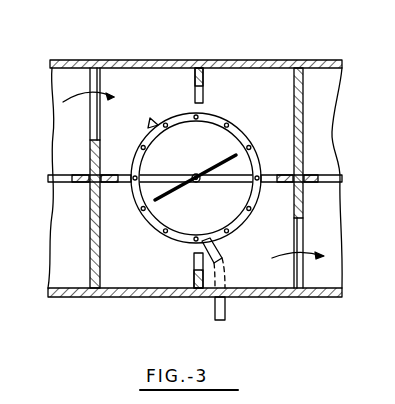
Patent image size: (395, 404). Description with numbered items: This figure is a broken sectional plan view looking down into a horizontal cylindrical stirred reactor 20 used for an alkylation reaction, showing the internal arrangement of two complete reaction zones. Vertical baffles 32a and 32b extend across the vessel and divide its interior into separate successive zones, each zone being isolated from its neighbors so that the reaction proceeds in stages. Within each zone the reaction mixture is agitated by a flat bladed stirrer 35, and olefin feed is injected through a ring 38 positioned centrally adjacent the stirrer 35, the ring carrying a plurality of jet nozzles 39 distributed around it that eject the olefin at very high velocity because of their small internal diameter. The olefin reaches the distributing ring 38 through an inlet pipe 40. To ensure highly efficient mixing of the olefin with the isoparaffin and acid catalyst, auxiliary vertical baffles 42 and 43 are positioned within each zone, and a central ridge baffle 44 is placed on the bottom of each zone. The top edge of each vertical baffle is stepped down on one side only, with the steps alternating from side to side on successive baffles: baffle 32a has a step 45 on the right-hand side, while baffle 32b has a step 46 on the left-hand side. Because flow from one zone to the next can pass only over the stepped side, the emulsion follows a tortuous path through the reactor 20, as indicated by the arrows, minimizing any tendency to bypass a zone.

The reactor 20 is at (146, 59).
The vertical baffle 32a is at (100, 249).
The vertical baffle 32b is at (293, 108).
The flat bladed stirrer 35 is at (181, 190).
The ring 38 is at (146, 226).
The jet nozzles 39 is at (152, 126).
The inlet pipe 40 is at (226, 313).
The auxiliary vertical baffle 42 is at (287, 174).
The auxiliary vertical baffle 43 is at (204, 90).
The central ridge baffle 44 is at (122, 174).
The step 45 is at (99, 126).
The step 46 is at (293, 241).